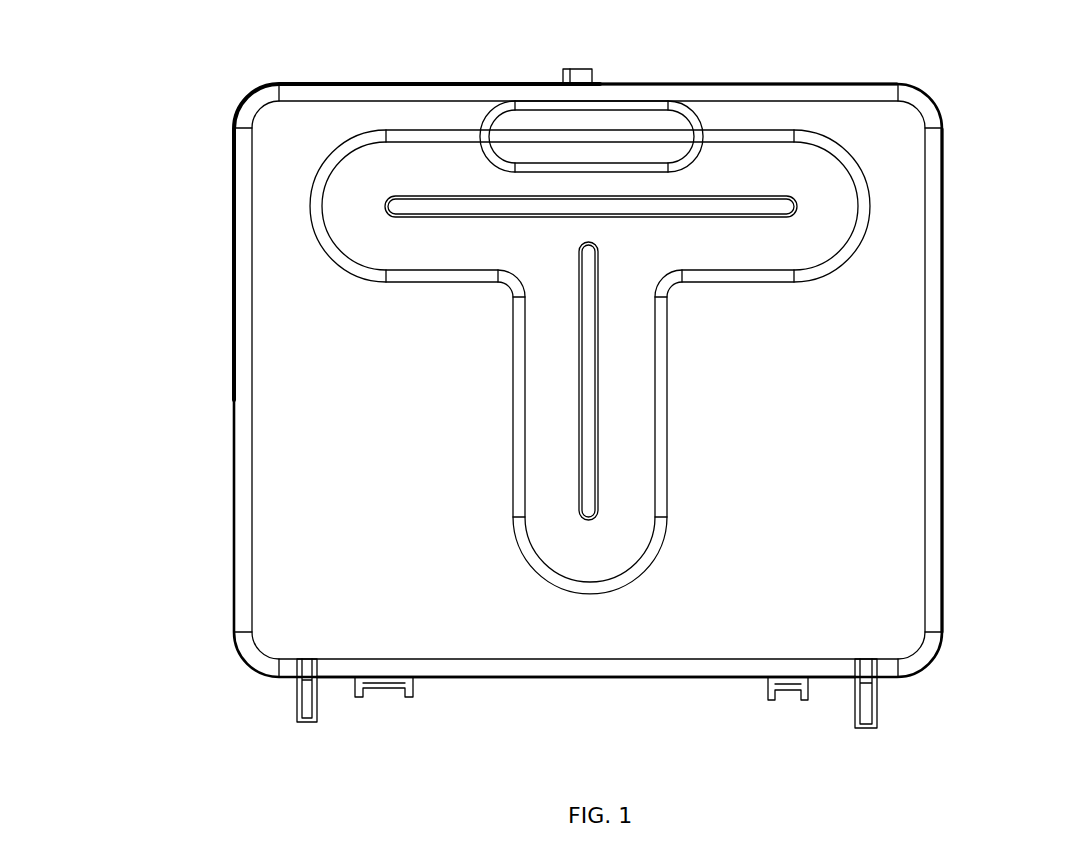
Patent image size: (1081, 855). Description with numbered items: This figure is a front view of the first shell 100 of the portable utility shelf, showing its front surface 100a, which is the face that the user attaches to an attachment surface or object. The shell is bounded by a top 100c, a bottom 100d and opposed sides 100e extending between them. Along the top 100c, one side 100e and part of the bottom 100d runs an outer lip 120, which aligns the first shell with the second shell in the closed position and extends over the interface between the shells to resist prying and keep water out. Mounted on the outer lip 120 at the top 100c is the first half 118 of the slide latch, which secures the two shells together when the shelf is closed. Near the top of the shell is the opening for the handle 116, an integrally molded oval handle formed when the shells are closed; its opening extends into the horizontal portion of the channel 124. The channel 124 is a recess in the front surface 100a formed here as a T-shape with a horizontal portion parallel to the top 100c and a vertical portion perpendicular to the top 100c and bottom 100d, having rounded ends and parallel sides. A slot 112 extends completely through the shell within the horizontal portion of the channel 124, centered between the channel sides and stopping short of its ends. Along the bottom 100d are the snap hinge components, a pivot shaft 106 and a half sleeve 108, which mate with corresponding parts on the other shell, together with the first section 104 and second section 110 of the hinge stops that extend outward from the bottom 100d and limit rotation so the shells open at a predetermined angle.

The first shell 100 is at (554, 388).
The front surface 100a is at (313, 463).
The top 100c is at (755, 86).
The bottom 100d is at (582, 678).
The opposed sides 100e is at (940, 347).
The first section of hinge stop 104 is at (302, 708).
The pivot shaft 106 is at (385, 695).
The half sleeve 108 is at (790, 697).
The second section of hinge stop 110 is at (868, 707).
The slot 112 is at (615, 207).
The handle 116 is at (660, 133).
The first half of slide latch 118 is at (588, 75).
The outer lip 120 is at (360, 78).
The channel 124 is at (550, 343).